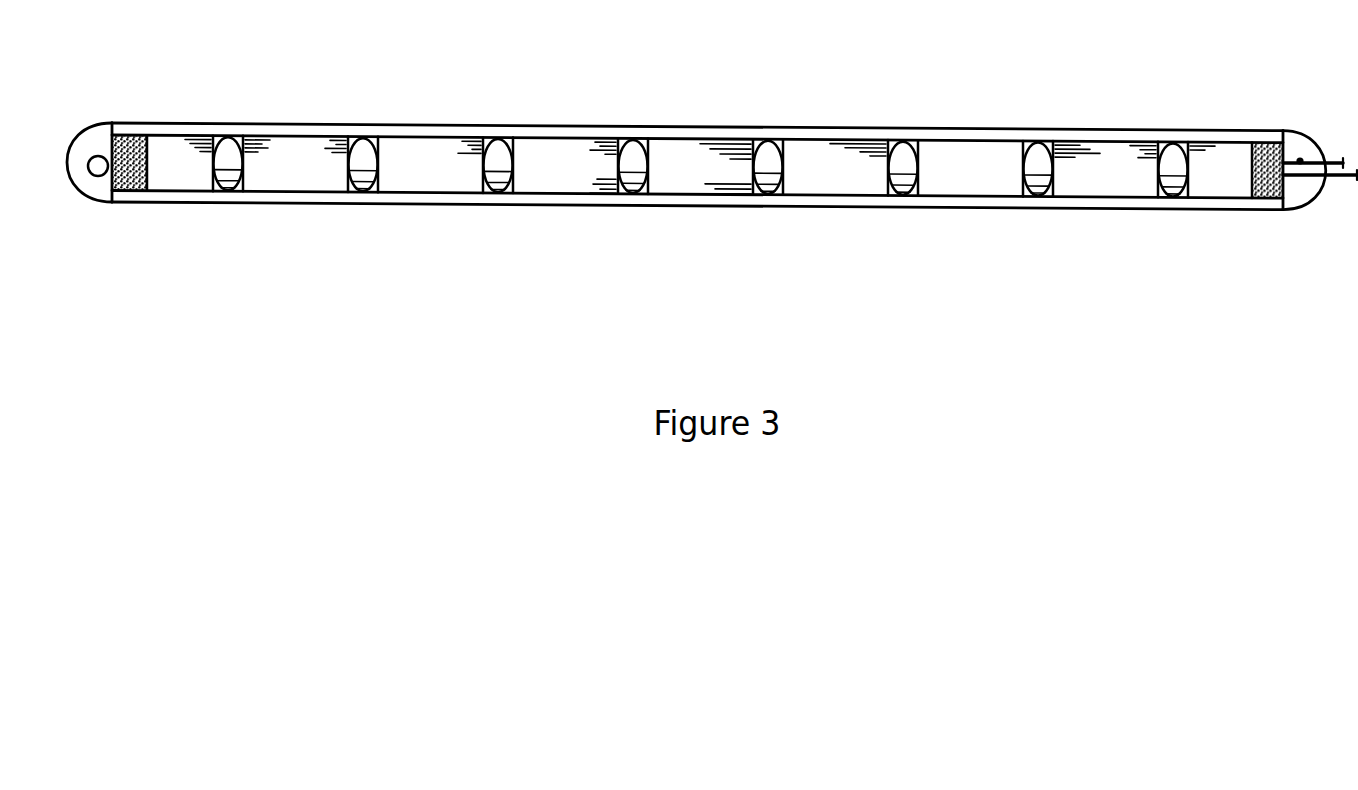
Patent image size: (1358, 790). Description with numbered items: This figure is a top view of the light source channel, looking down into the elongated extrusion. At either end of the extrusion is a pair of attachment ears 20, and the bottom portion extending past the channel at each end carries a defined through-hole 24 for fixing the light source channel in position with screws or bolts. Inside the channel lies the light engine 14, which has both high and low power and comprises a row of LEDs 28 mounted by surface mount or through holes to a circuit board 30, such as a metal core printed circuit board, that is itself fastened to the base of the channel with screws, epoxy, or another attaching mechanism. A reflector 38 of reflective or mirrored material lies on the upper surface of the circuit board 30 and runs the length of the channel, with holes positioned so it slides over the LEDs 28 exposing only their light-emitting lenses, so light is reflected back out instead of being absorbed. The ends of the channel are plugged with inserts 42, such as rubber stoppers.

The light engine 14 is at (465, 178).
The attachment ears 20 is at (85, 187).
The through-hole 24 is at (90, 158).
The LEDs 28 is at (230, 152).
The circuit board 30 is at (177, 170).
The reflector 38 is at (163, 160).
The inserts 42 is at (128, 185).